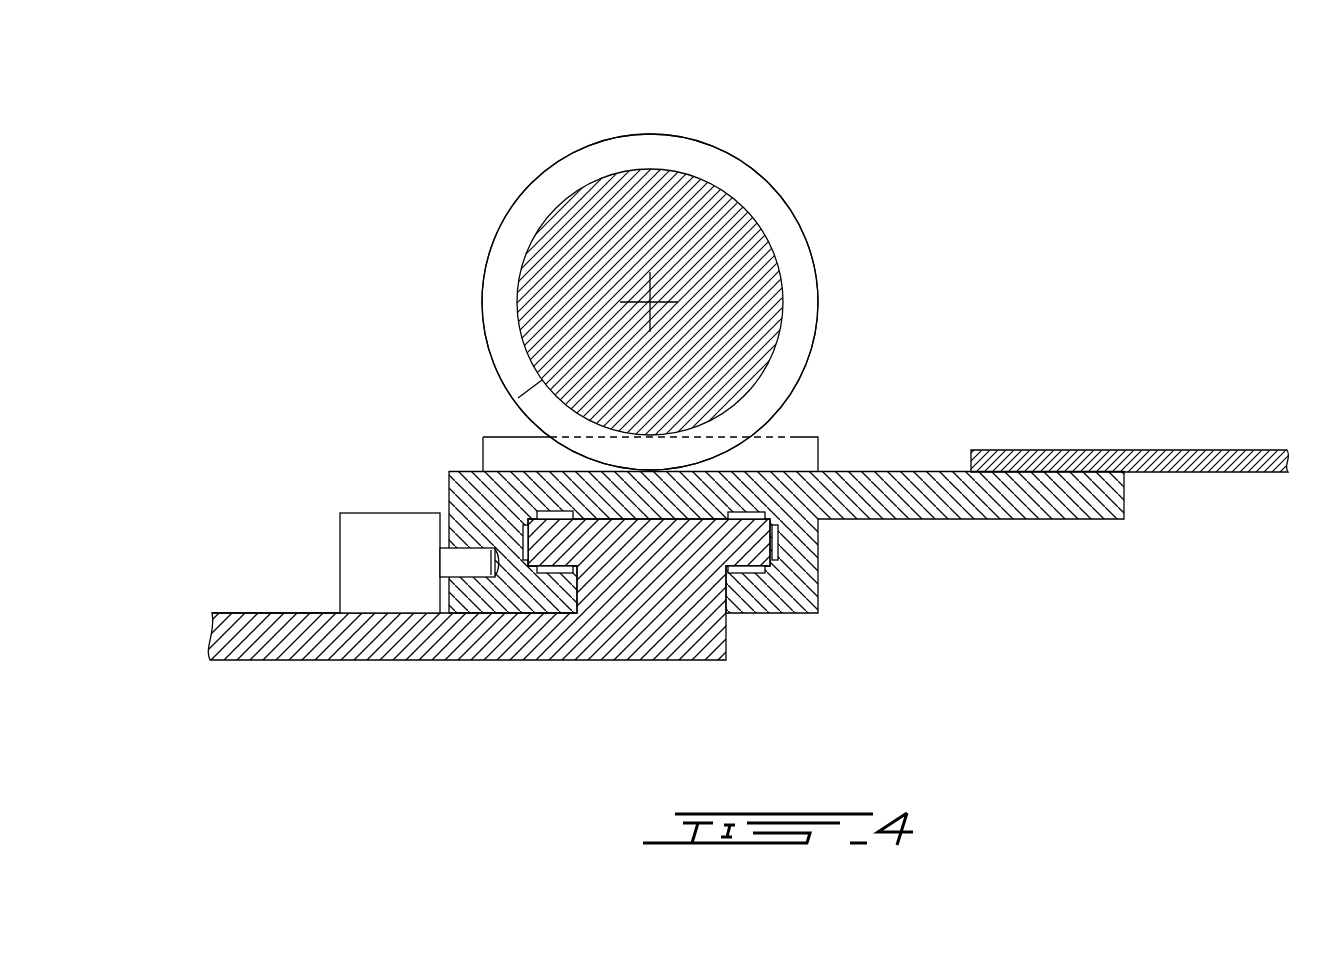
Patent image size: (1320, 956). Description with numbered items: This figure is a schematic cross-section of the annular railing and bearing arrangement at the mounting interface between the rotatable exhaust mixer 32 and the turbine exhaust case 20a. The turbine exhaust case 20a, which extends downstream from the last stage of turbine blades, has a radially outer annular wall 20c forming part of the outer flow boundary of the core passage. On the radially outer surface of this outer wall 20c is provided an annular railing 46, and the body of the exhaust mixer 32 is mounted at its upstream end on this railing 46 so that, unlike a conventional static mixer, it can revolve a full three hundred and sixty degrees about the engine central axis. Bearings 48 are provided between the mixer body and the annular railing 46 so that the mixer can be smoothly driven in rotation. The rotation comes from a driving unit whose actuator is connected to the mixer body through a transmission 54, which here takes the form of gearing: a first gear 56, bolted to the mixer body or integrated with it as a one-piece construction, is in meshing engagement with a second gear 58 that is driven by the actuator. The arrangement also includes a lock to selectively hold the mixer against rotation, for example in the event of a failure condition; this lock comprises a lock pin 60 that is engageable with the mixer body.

The transmission 54 is at (850, 155).
The second gear 58 is at (815, 268).
The exhaust mixer 32 is at (1145, 393).
The bearings 48 is at (551, 512).
The first gear 56 is at (818, 453).
The lock pin 60 is at (458, 560).
The radially outer annular wall 20c is at (253, 613).
The turbine exhaust case 20a is at (348, 675).
The annular railing 46 is at (646, 538).